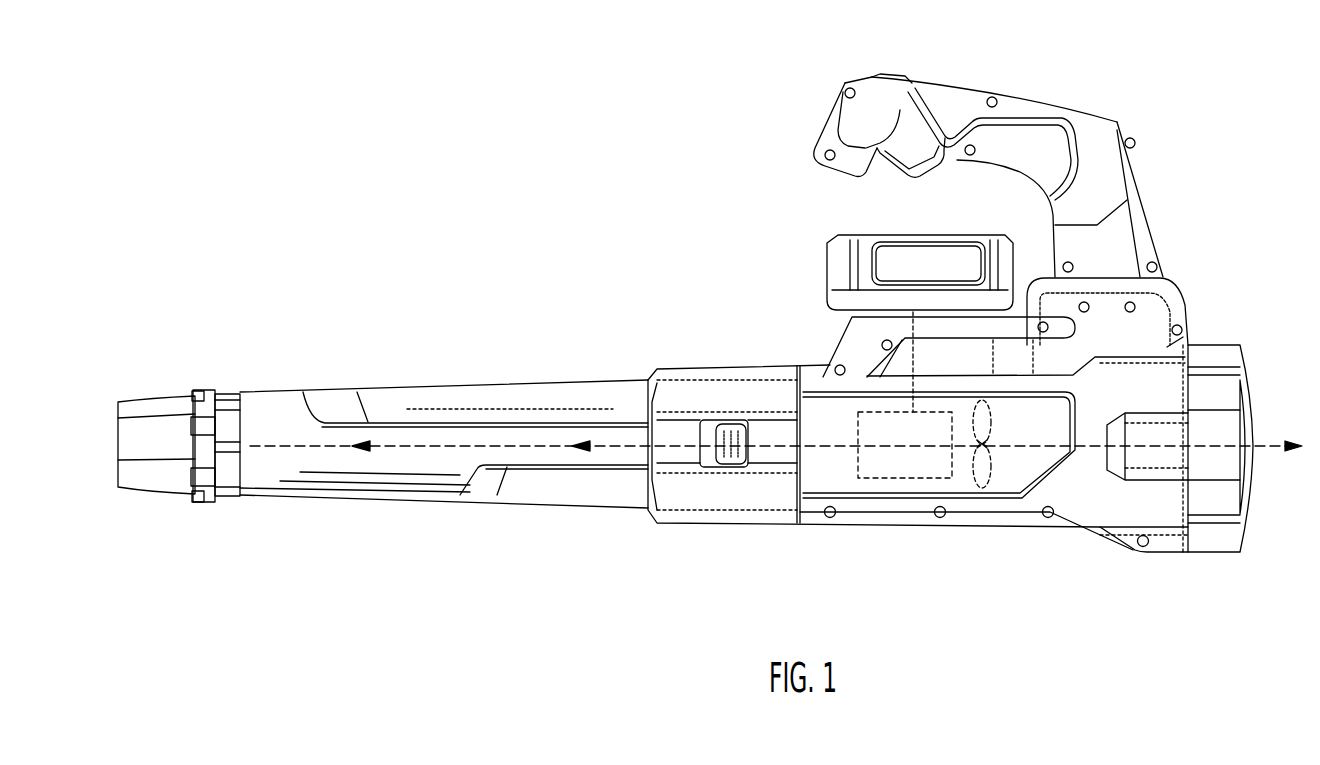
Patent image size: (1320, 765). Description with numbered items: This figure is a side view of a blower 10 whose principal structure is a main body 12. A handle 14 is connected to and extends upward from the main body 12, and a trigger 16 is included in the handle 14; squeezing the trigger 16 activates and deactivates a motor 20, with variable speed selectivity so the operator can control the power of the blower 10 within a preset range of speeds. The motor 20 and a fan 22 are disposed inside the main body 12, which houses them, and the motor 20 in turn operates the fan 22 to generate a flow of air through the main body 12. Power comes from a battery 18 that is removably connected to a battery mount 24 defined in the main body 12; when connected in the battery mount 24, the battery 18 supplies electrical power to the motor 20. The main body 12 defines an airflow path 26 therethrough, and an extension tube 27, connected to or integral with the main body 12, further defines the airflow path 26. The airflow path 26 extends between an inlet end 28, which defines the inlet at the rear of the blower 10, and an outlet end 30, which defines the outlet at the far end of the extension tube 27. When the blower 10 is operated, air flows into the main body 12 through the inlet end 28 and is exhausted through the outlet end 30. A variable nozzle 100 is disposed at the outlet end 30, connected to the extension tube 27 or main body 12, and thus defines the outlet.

The blower 10 is at (576, 237).
The main body 12 is at (734, 353).
The handle 14 is at (1024, 70).
The trigger 16 is at (893, 186).
The battery 18 is at (969, 212).
The motor 20 is at (905, 478).
The fan 22 is at (997, 455).
The battery mount 24 is at (815, 321).
The airflow path 26 is at (608, 445).
The extension tube 27 is at (613, 545).
The inlet end 28 is at (1255, 327).
The outlet end 30 is at (119, 388).
The variable nozzle 100 is at (161, 388).